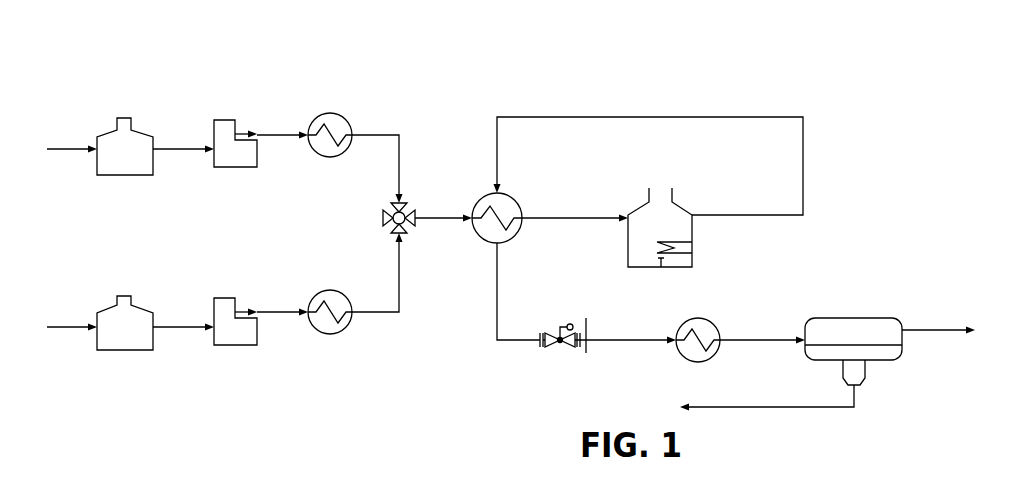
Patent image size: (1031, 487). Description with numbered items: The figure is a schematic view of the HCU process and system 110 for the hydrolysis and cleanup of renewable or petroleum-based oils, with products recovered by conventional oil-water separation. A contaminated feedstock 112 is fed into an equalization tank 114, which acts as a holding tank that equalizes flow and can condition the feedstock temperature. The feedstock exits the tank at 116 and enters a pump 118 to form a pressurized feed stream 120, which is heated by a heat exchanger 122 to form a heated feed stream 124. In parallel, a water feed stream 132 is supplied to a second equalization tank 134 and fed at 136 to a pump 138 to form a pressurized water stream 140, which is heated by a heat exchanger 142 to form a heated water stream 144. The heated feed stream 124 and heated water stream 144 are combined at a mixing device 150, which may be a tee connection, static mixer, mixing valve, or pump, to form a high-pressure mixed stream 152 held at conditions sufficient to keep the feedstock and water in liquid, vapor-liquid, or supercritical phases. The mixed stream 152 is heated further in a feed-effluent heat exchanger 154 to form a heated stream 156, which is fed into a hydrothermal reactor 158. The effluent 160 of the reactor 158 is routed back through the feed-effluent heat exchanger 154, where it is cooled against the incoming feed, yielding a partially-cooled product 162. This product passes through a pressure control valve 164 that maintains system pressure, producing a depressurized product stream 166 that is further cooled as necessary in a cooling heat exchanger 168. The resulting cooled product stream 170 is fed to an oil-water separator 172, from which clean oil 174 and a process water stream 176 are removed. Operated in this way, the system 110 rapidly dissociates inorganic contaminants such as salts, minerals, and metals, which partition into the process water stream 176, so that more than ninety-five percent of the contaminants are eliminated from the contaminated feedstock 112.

The HCU process and system 110 is at (146, 88).
The contaminated feedstock 112 is at (72, 139).
The equalization tank 114 is at (125, 146).
The equalization tank outlet stream 116 is at (183, 137).
The pump 118 is at (235, 143).
The pressurized feed stream 120 is at (282, 125).
The heat exchanger 122 is at (330, 145).
The heated feed stream 124 is at (394, 169).
The water feed stream 132 is at (72, 339).
The equalization tank 134 is at (125, 323).
The water equalization tank outlet stream 136 is at (183, 339).
The pump 138 is at (235, 321).
The pressurized water stream 140 is at (282, 301).
The heat exchanger 142 is at (330, 324).
The heated water stream 144 is at (394, 272).
The mixing device 150 is at (383, 218).
The high-pressure mixed stream 152 is at (443, 208).
The feed-effluent heat exchanger 154 is at (484, 227).
The heated stream 156 is at (575, 208).
The hydrothermal reactor 158 is at (660, 227).
The effluent 160 is at (649, 166).
The partially-cooled product 162 is at (518, 291).
The pressure control valve 164 is at (563, 347).
The depressurized product stream 166 is at (631, 330).
The cooling heat exchanger 168 is at (698, 353).
The cooled product stream 170 is at (762, 330).
The oil-water separator 172 is at (853, 351).
The clean oil 174 is at (938, 320).
The process water stream 176 is at (767, 397).